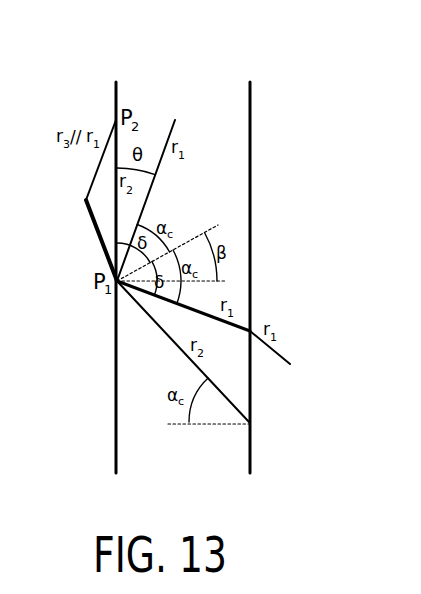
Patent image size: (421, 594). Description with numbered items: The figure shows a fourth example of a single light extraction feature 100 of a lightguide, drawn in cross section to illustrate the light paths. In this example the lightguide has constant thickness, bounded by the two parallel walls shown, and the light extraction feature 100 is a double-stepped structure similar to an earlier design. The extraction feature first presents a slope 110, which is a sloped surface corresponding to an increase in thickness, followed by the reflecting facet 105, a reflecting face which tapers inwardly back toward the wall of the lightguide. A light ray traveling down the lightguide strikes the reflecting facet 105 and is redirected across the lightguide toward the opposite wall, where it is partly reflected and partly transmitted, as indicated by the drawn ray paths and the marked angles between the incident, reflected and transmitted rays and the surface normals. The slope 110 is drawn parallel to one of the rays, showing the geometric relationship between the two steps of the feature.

The light extraction feature 100 is at (93, 248).
The reflecting facet 105 is at (93, 218).
The slope 110 is at (95, 175).